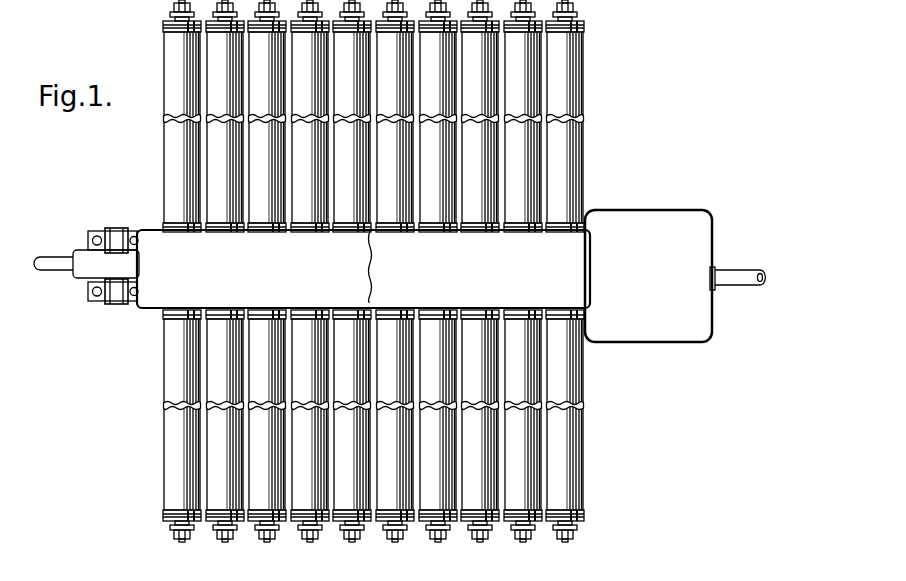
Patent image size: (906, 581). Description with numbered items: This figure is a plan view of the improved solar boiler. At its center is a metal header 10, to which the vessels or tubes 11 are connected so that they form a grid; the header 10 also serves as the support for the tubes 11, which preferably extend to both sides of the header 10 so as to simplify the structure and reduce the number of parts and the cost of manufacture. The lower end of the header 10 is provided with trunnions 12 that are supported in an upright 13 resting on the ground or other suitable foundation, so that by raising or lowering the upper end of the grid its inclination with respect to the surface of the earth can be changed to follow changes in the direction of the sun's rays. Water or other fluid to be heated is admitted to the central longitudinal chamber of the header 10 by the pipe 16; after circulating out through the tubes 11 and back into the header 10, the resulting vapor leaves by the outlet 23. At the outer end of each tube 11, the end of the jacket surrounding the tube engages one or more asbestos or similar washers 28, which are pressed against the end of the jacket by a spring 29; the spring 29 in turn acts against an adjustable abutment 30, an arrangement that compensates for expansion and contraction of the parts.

The header 10 is at (363, 269).
The tubes 11 is at (585, 80).
The trunnions 12 is at (107, 231).
The upright 13 is at (108, 291).
The pipe 16 is at (50, 264).
The outlet 23 is at (743, 279).
The washers 28 is at (585, 26).
The spring 29 is at (580, 20).
The adjustable abutment 30 is at (577, 15).